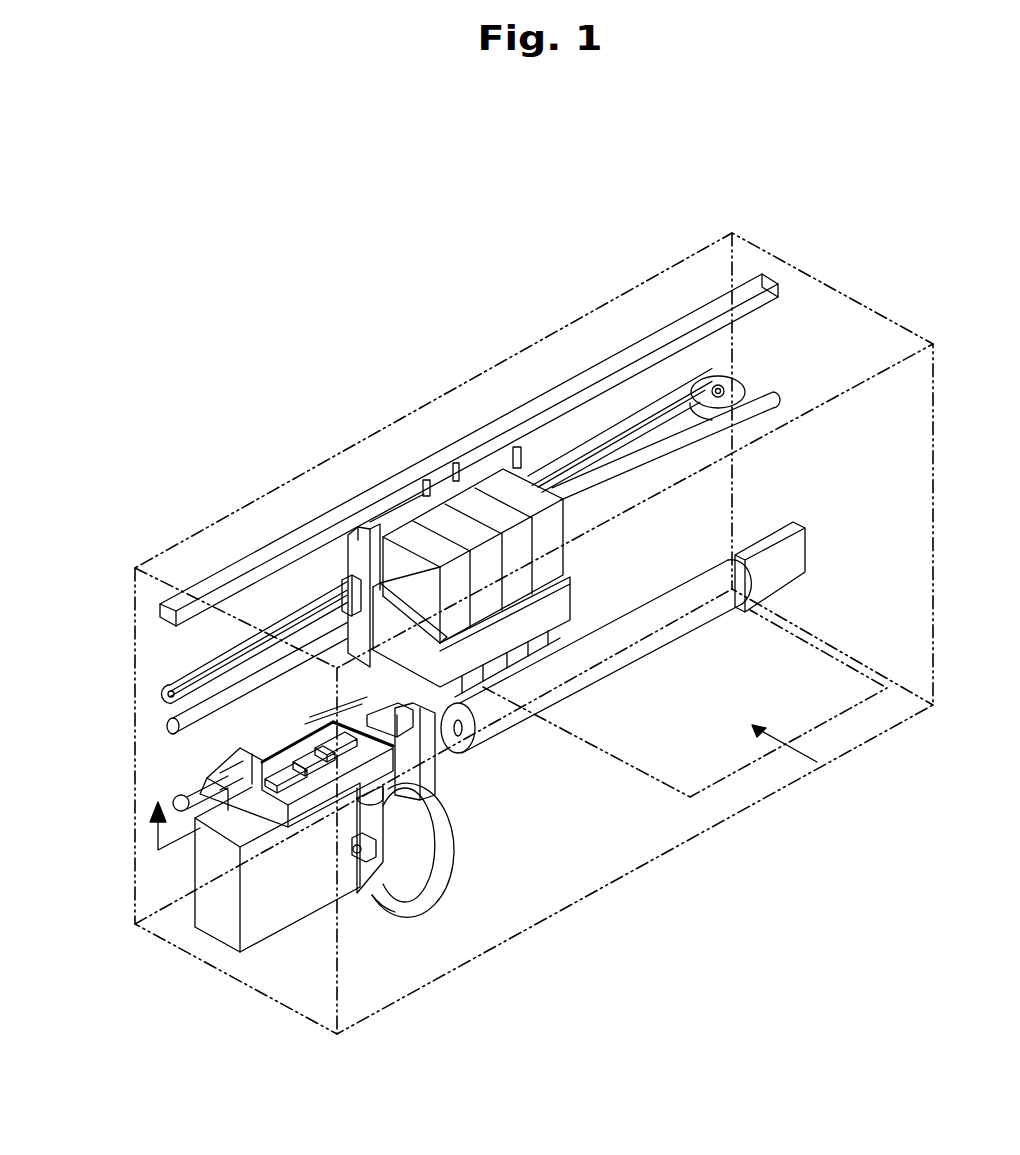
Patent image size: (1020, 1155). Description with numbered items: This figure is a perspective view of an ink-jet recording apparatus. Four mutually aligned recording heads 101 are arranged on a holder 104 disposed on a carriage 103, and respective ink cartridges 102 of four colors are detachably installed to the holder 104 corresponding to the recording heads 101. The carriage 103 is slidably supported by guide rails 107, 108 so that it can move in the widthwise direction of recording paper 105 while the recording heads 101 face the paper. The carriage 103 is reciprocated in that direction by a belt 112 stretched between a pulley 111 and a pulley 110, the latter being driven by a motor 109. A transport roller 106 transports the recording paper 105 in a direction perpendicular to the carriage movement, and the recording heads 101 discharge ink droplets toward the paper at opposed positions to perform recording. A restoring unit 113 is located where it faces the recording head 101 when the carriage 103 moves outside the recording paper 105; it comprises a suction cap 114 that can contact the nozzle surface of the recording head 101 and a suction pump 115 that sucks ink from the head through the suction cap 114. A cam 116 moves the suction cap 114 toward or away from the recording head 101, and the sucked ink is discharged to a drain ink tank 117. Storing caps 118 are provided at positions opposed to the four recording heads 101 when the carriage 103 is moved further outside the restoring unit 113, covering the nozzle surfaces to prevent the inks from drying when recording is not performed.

The recording heads 101 is at (560, 637).
The ink cartridges 102 is at (521, 486).
The carriage 103 is at (350, 548).
The holder 104 is at (569, 596).
The recording paper 105 is at (678, 765).
The transport roller 106 is at (707, 578).
The guide rail 107 is at (777, 399).
The guide rail 108 is at (682, 323).
The motor 109 is at (741, 380).
The pulley 110 is at (718, 386).
The pulley 111 is at (166, 690).
The belt 112 is at (643, 427).
The restoring unit 113 is at (366, 921).
The suction cap 114 is at (330, 713).
The suction pump 115 is at (376, 820).
The cam 116 is at (428, 893).
The drain ink tank 117 is at (273, 917).
The storing caps 118 is at (297, 772).